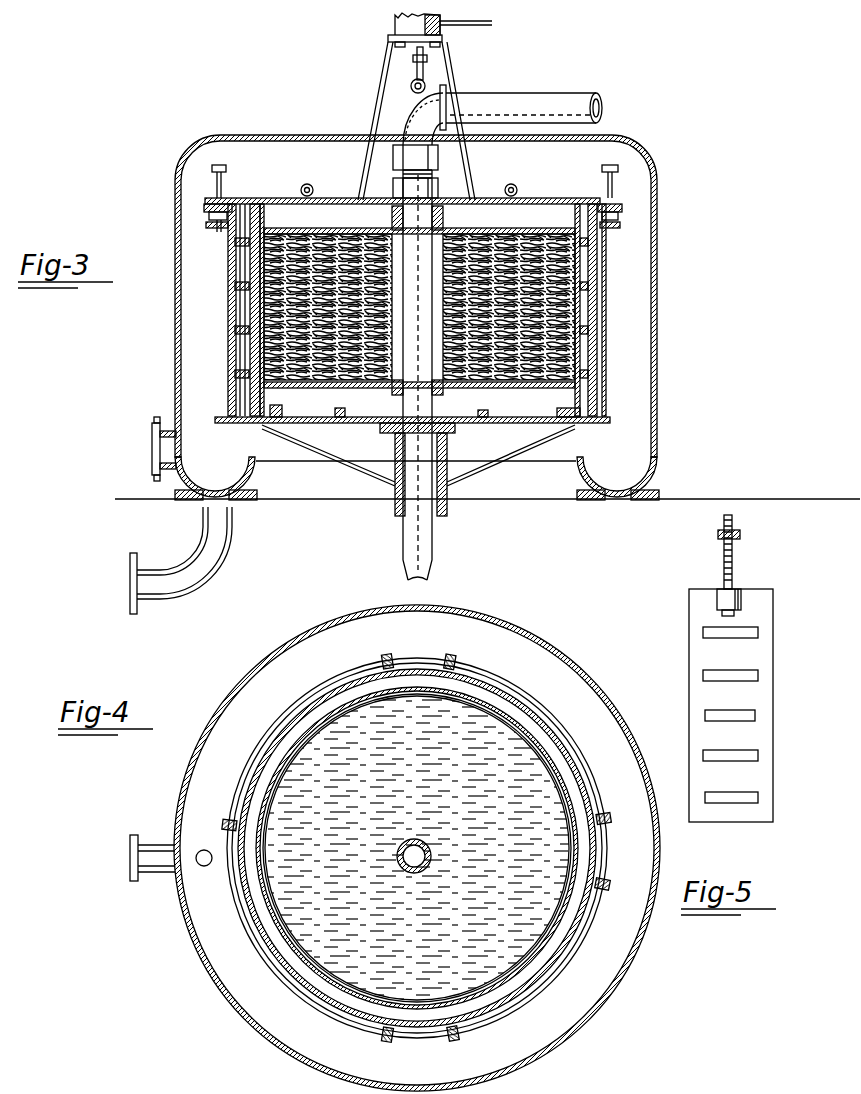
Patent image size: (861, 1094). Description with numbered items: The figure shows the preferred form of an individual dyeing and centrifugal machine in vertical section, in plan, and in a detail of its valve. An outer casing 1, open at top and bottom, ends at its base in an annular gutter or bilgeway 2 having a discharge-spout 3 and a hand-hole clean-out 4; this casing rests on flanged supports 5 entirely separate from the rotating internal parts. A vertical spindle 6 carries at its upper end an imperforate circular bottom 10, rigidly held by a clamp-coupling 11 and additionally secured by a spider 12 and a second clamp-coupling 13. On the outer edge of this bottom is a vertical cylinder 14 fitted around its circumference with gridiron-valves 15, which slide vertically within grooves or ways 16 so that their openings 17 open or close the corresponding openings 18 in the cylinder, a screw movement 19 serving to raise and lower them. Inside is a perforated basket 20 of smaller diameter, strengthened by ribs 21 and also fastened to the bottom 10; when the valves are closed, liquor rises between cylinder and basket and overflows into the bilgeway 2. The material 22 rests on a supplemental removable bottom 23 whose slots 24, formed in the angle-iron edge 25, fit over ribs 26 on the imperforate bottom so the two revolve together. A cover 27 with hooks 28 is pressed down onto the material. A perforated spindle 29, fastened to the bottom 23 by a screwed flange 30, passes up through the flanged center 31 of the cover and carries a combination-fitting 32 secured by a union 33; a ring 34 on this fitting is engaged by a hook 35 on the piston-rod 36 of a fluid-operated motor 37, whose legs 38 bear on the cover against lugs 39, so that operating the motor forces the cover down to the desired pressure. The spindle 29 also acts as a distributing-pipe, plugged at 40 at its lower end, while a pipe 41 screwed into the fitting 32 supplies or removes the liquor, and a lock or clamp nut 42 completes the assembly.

In FIG. 3, the outer casing 1 is at (658, 334).
In FIG. 4, the outer casing 1 is at (556, 665).
In FIG. 3, the annular gutter or bilgeway 2 is at (416, 476).
In FIG. 3, the discharge-spout 3 is at (138, 579).
In FIG. 4, the discharge-spout 3 is at (138, 866).
In FIG. 3, the hand-hole clean-out 4 is at (152, 453).
In FIG. 4, the hand-hole clean-out 4 is at (158, 888).
In FIG. 3, the flanged supports 5 is at (252, 494).
In FIG. 3, the vertical spindle 6 is at (403, 543).
In FIG. 3, the imperforate circular bottom 10 is at (580, 428).
In FIG. 3, the clamp-coupling 11 is at (447, 447).
In FIG. 3, the spider 12 is at (338, 460).
In FIG. 3, the clamp-coupling 13 is at (447, 508).
In FIG. 3, the vertical cylinder 14 is at (606, 240).
In FIG. 4, the vertical cylinder 14 is at (556, 738).
In FIG. 4, the gridiron-valves 15 is at (400, 662).
In FIG. 5, the gridiron-valves 15 is at (731, 705).
In FIG. 4, the grooves or ways 16 is at (446, 664).
In FIG. 3, the openings 17 is at (606, 292).
In FIG. 5, the openings 17 is at (740, 650).
In FIG. 3, the openings 18 is at (606, 268).
In FIG. 3, the screw movement 19 is at (602, 174).
In FIG. 5, the screw movement 19 is at (733, 553).
In FIG. 3, the perforated inner cylinder or basket 20 is at (226, 272).
In FIG. 4, the perforated inner cylinder or basket 20 is at (566, 780).
In FIG. 3, the ribs 21 is at (240, 337).
In FIG. 3, the material 22 is at (240, 370).
In FIG. 4, the material 22 is at (417, 848).
In FIG. 3, the supplemental removable bottom 23 is at (512, 385).
In FIG. 3, the slots 24 is at (576, 422).
In FIG. 3, the edge 25 is at (262, 409).
In FIG. 3, the ribs 26 is at (272, 418).
In FIG. 3, the cover 27 is at (326, 240).
In FIG. 3, the hooks 28 is at (302, 191).
In FIG. 3, the spindle 29 is at (443, 228).
In FIG. 4, the spindle 29 is at (432, 856).
In FIG. 3, the screwed flange 30 is at (419, 397).
In FIG. 3, the flanged center 31 is at (392, 222).
In FIG. 3, the combination-fitting 32 is at (423, 119).
In FIG. 3, the union 33 is at (393, 162).
In FIG. 3, the ring 34 is at (426, 88).
In FIG. 3, the hook 35 is at (425, 71).
In FIG. 3, the piston-rod 36 is at (444, 43).
In FIG. 3, the fluid-operated motor 37 is at (443, 17).
In FIG. 3, the legs 38 is at (374, 108).
In FIG. 3, the lugs 39 is at (320, 196).
In FIG. 3, the plug 40 is at (453, 400).
In FIG. 3, the pipe 41 is at (564, 104).
In FIG. 3, the lock or clamp nut 42 is at (393, 190).